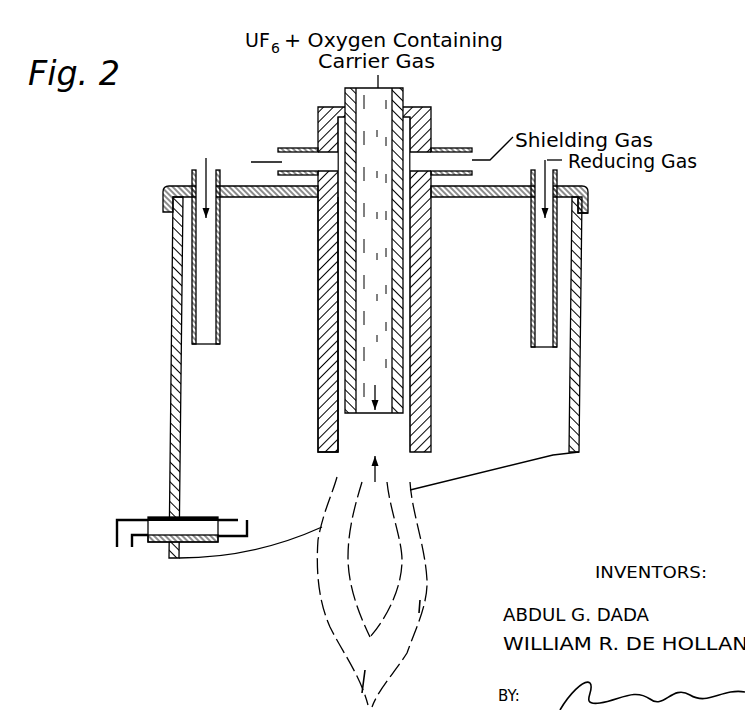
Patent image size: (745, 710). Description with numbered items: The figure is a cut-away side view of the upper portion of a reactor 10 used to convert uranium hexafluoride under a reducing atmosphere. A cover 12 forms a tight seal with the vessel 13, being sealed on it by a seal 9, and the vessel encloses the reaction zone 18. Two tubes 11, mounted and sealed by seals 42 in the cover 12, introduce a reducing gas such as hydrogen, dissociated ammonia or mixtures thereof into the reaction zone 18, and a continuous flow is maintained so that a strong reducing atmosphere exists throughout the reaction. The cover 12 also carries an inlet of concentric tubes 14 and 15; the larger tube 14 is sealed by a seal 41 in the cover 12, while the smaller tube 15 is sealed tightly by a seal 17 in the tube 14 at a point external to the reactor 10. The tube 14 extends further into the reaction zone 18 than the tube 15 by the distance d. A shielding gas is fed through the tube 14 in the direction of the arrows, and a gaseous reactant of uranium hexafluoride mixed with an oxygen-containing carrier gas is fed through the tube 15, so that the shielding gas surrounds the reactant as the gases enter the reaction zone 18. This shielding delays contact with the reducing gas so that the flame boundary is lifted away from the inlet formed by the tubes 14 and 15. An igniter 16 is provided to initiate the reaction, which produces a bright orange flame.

The seal 9 is at (191, 198).
The reactor 10 is at (613, 112).
The tubes 11 is at (192, 178).
The cover 12 is at (504, 198).
The vessel 13 is at (580, 364).
The tube 14 is at (431, 239).
The tube 15 is at (405, 137).
The igniter 16 is at (155, 517).
The seal 17 is at (348, 107).
The reaction zone 18 is at (520, 422).
The seal 41 is at (318, 197).
The seals 42 is at (558, 185).